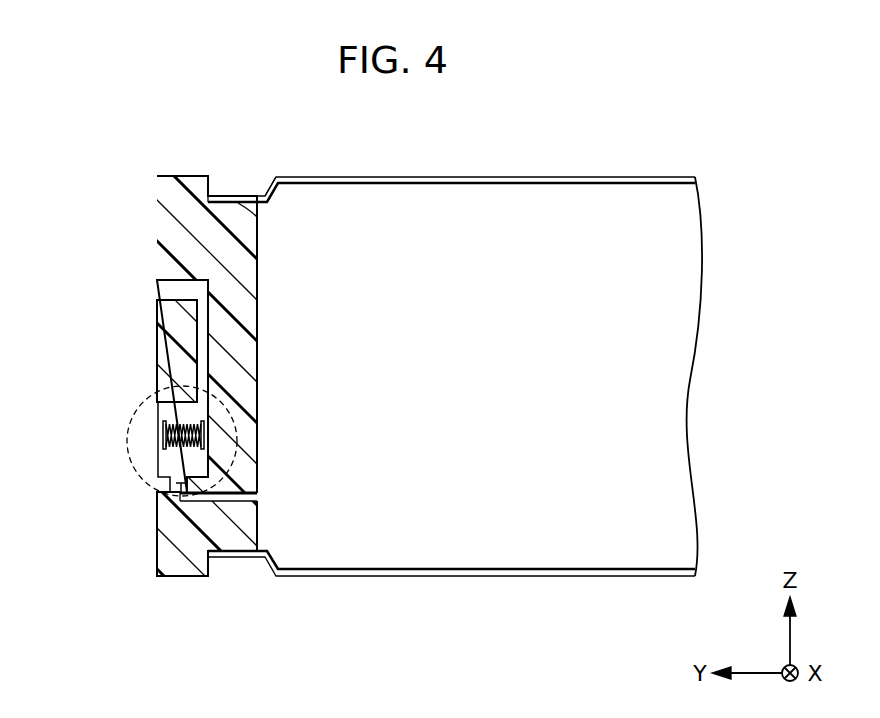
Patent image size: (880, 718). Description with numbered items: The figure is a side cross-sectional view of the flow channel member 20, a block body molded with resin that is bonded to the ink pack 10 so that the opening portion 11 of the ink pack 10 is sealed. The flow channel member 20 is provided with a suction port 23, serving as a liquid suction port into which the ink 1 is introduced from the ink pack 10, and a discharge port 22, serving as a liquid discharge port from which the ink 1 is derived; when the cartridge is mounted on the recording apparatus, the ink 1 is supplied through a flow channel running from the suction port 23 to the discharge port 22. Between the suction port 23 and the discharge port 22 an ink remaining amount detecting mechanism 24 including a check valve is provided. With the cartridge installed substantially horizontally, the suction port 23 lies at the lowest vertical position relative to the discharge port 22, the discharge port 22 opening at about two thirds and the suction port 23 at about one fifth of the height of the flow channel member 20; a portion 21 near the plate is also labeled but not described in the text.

The ink 1 is at (528, 518).
The ink pack 10 is at (486, 177).
The opening portion 11 is at (257, 221).
The flow channel member 20 is at (177, 231).
The stepped portion 21 is at (221, 202).
The discharge port 22 is at (158, 289).
The suction port 23 is at (250, 496).
The ink remaining amount detecting mechanism 24 is at (127, 441).